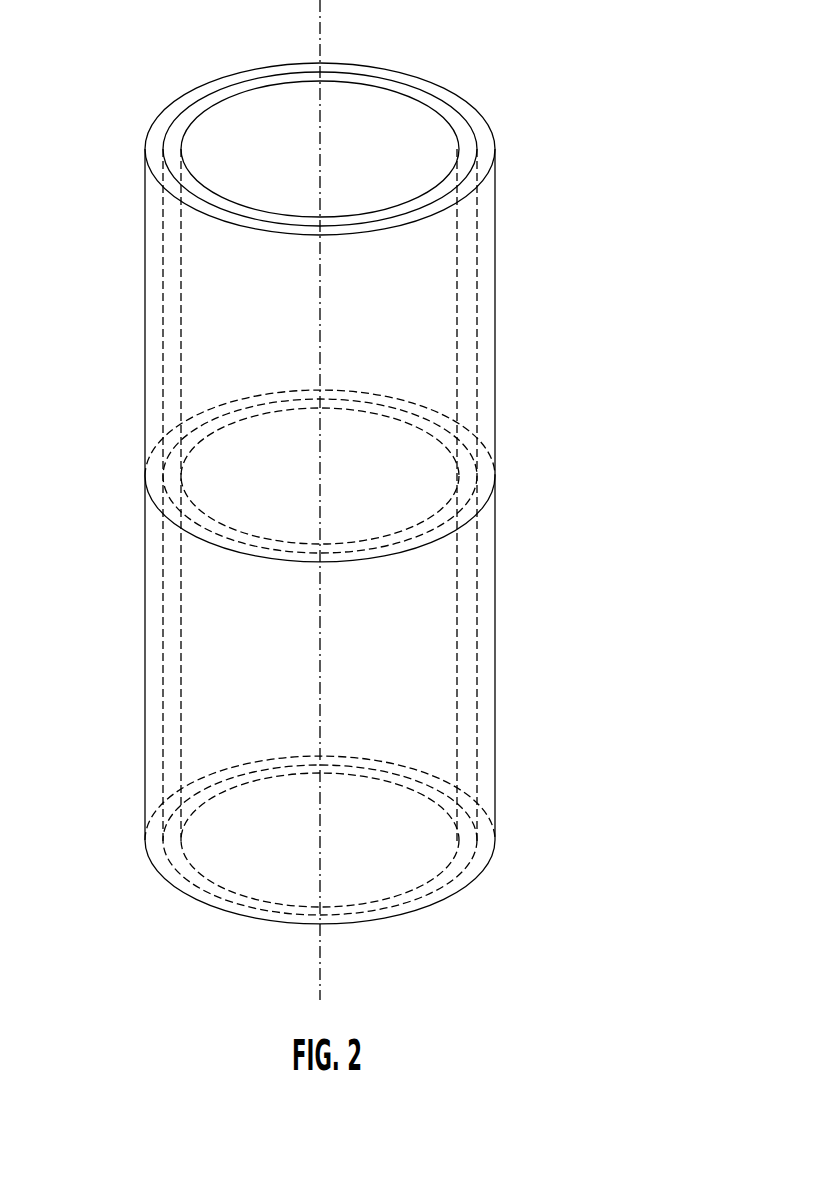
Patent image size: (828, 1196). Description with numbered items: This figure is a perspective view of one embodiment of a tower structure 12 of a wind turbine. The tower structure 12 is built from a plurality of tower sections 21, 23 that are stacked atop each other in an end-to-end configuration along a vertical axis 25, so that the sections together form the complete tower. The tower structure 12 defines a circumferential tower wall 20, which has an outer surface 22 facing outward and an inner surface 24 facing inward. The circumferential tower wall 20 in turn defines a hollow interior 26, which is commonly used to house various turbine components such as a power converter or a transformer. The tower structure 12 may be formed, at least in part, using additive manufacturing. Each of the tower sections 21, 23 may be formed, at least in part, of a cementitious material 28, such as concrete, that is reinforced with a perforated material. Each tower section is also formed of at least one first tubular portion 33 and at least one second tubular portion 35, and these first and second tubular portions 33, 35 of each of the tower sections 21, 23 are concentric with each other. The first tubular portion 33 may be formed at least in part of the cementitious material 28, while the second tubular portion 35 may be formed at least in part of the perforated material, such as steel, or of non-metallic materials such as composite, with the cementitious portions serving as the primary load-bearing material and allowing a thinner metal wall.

The tower structure 12 is at (642, 237).
The circumferential tower wall 20 is at (145, 317).
The tower section 21 is at (157, 617).
The outer surface 22 is at (146, 412).
The tower section 23 is at (155, 281).
The inner surface 24 is at (165, 428).
The vertical axis 25 is at (320, 720).
The hollow interior 26 is at (293, 354).
The cementitious material 28 is at (481, 480).
The first tubular portion 33 is at (160, 135).
The second tubular portion 35 is at (233, 95).